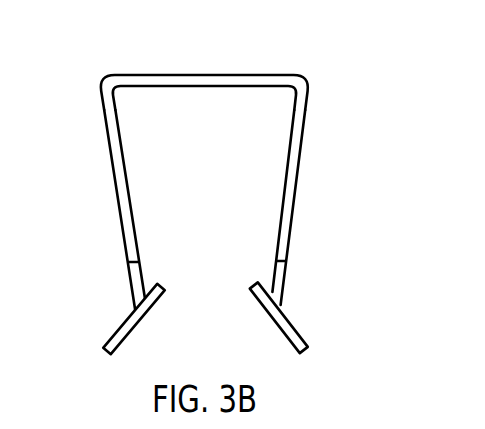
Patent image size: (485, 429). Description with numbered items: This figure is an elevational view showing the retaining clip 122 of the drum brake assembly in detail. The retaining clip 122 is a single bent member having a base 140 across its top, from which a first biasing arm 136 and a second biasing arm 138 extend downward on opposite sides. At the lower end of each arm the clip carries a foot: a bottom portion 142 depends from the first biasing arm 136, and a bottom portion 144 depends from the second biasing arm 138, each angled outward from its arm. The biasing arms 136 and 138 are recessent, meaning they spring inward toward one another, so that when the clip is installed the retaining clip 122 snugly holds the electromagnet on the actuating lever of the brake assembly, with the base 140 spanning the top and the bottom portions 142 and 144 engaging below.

The retaining clip 122 is at (372, 90).
The first biasing arm 136 is at (294, 202).
The second biasing arm 138 is at (120, 213).
The base 140 is at (232, 75).
The bottom portion 142 is at (303, 336).
The bottom portion 144 is at (108, 342).